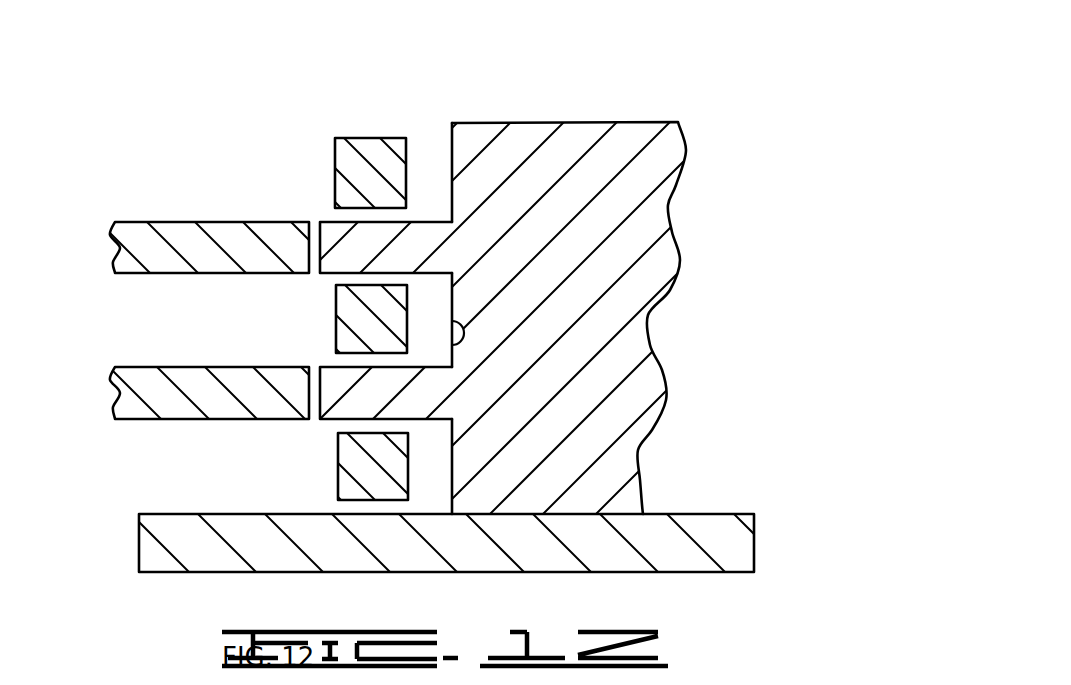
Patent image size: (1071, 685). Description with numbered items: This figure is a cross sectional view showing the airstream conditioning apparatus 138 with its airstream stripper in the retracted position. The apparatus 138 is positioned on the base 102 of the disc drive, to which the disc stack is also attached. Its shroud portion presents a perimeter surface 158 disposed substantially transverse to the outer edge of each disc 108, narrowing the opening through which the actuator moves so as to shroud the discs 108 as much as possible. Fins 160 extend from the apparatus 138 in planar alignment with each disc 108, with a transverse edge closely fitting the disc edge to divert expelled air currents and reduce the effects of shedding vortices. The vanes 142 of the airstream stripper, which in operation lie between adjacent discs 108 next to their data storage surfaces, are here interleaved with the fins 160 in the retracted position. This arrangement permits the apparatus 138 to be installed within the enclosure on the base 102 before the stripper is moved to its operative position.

The airstream conditioning apparatus 138 is at (583, 97).
The perimeter surface 158 is at (458, 332).
The fin 160 is at (358, 245).
The data disc 108 is at (143, 240).
The vane 142 is at (363, 148).
The base 102 is at (730, 540).